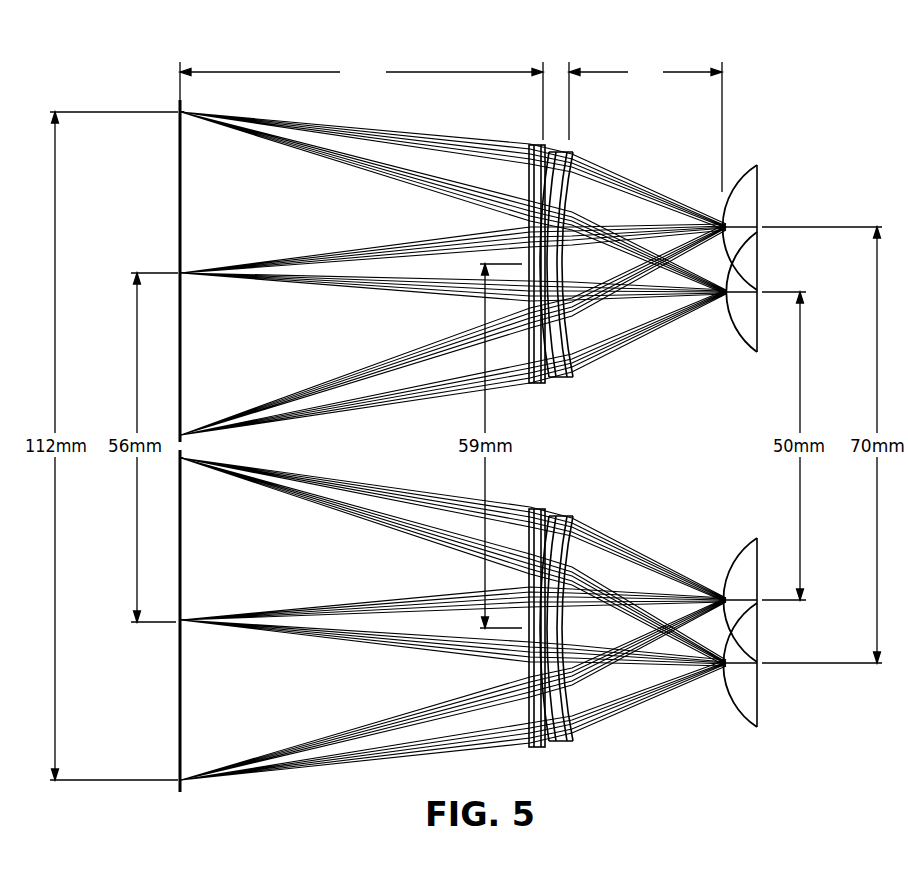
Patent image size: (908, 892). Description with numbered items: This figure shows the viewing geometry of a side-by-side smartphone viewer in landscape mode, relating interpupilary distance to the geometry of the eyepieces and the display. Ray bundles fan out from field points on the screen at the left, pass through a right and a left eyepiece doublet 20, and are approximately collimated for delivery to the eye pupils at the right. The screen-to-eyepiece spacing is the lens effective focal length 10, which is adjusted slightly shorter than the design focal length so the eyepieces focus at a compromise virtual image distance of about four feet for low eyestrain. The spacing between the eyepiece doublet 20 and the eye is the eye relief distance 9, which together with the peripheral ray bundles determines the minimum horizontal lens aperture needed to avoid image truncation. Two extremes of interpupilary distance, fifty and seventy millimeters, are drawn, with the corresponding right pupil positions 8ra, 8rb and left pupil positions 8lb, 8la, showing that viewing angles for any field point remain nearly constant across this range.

The effective focal length 10 is at (398, 71).
The eye relief distance 9 is at (681, 71).
The eyepiece doublet 20 is at (521, 140).
The right eye pupil position a 8ra is at (757, 183).
The right eye pupil position b 8rb is at (757, 337).
The left eye pupil position b 8lb is at (757, 556).
The left eye pupil position a 8la is at (757, 710).